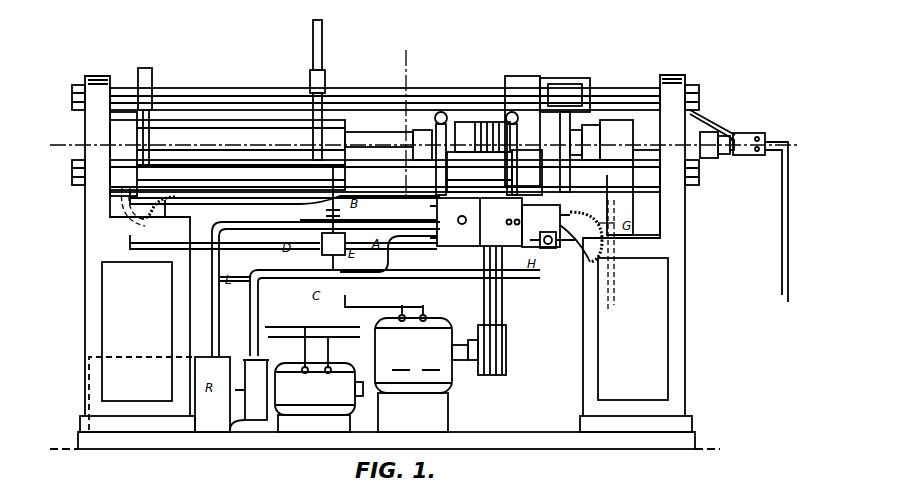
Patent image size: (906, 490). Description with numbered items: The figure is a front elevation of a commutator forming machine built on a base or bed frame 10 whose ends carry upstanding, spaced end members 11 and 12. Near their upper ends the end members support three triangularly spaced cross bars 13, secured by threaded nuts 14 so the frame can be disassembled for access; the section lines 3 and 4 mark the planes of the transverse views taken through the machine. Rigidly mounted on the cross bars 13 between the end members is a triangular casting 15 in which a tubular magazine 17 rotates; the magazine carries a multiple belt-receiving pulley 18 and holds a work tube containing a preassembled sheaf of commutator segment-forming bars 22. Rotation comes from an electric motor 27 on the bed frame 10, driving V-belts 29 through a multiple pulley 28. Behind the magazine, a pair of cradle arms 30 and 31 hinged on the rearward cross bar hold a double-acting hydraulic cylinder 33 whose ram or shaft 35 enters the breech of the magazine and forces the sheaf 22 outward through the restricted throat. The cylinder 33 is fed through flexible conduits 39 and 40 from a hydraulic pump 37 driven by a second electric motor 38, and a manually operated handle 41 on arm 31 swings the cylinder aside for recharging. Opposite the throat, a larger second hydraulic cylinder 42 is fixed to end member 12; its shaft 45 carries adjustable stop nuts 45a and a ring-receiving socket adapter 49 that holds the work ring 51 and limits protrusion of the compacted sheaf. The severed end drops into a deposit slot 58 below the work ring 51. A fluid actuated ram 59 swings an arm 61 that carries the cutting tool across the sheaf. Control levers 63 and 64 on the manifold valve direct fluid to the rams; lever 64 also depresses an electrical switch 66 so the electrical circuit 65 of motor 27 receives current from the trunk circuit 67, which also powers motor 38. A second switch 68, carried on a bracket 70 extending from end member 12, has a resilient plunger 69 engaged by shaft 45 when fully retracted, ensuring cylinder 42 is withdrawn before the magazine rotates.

The section line 3- 3 is at (422, 146).
The section line 4- 4 is at (404, 122).
The base or bed frame 10 is at (528, 443).
The end member 11 is at (85, 280).
The end member 12 is at (683, 325).
The cross bars 13 is at (238, 88).
The threaded nuts 14 is at (72, 97).
The casting 15 is at (522, 90).
The tubular magazine 17 is at (420, 128).
The multiple belt-receiving pulley 18 is at (472, 120).
The sheaf of commutator segment-forming bars 22 is at (595, 128).
The electric motor 27 is at (421, 375).
The multiple pulley 28 is at (512, 340).
The V-belts 29 is at (515, 316).
The cradle arm 30 is at (152, 86).
The cradle arm 31 is at (325, 82).
The hydraulic cylinder 33 is at (227, 154).
The ram or shaft 35 is at (372, 138).
The hydraulic pump 37 is at (249, 396).
The second electric motor 38 is at (319, 397).
The flexible conduit 39 is at (160, 214).
The flexible conduit 40 is at (325, 212).
The manually operated handle 41 is at (322, 46).
The second hydraulic cylinder 42 is at (642, 132).
The shaft 45 is at (712, 130).
The stop nuts 45a is at (708, 158).
The ring-receiving socket adapter 49 is at (612, 125).
The work ring 51 is at (578, 132).
The deposit slot 58 is at (581, 238).
The fluid actuated ram 59 is at (558, 246).
The arm 61 is at (568, 88).
The control lever 63 is at (447, 175).
The control lever 64 is at (512, 162).
The electrical circuit 65 is at (385, 307).
The electrical switch 66 is at (512, 214).
The trunk circuit 67 is at (286, 330).
The second switch 68 is at (752, 135).
The resilient plunger 69 is at (732, 152).
The bracket 70 is at (735, 130).